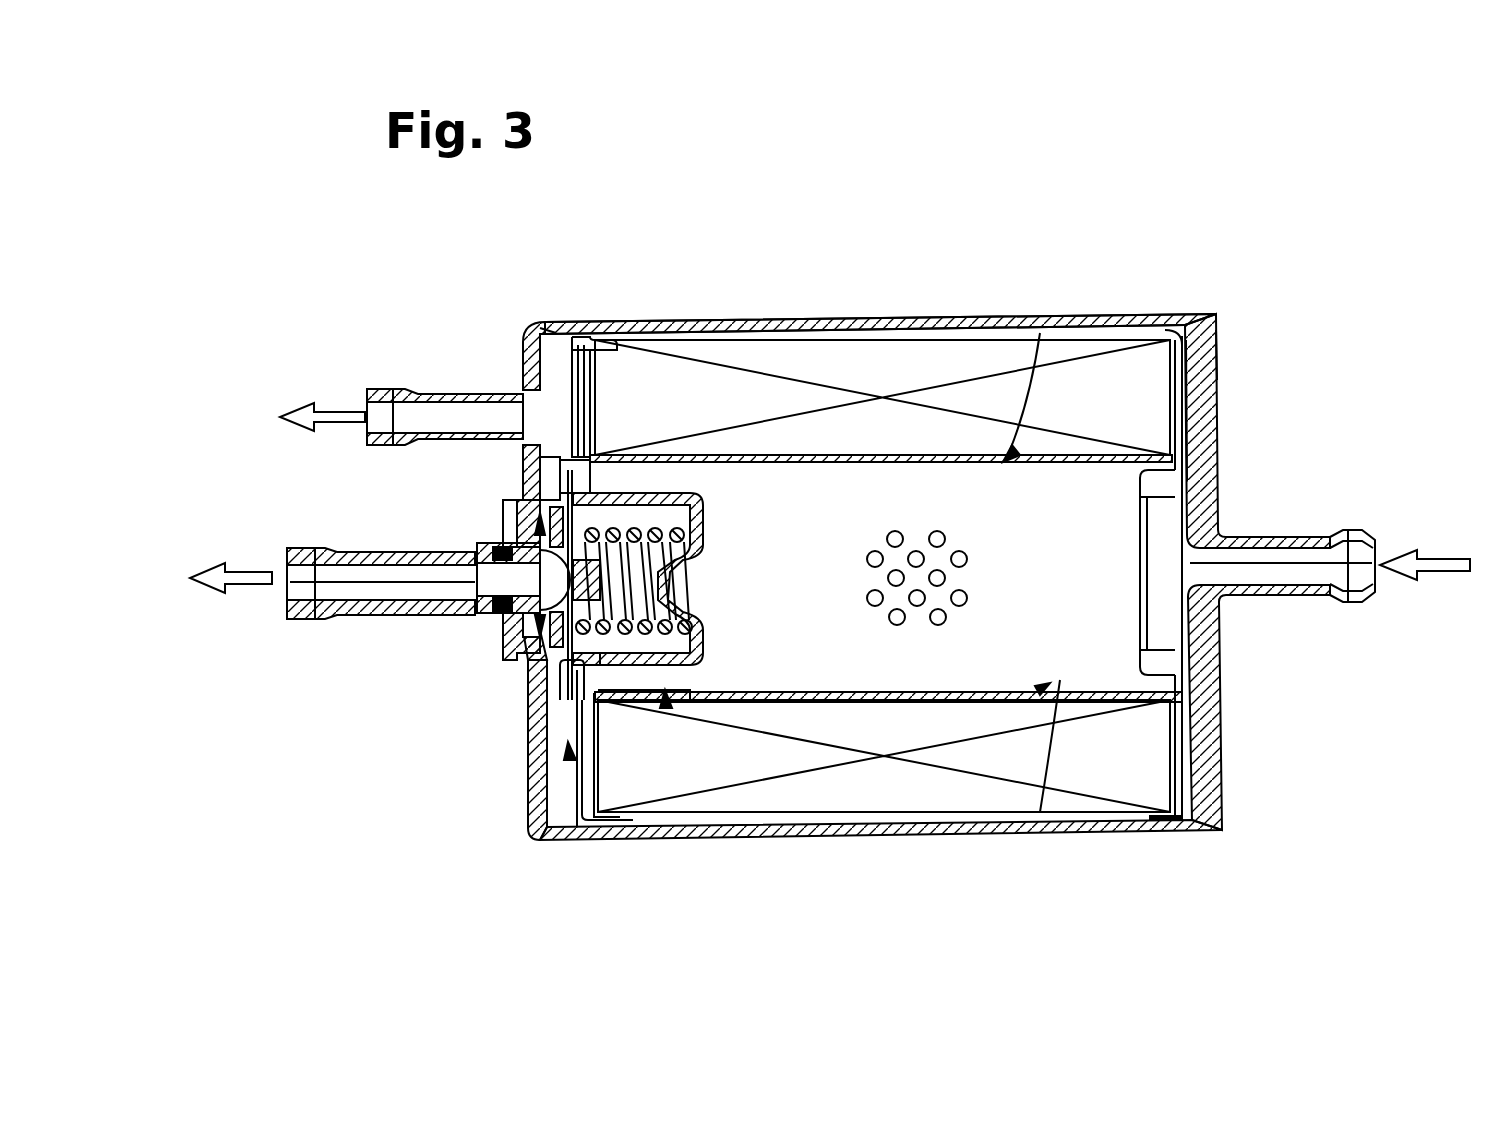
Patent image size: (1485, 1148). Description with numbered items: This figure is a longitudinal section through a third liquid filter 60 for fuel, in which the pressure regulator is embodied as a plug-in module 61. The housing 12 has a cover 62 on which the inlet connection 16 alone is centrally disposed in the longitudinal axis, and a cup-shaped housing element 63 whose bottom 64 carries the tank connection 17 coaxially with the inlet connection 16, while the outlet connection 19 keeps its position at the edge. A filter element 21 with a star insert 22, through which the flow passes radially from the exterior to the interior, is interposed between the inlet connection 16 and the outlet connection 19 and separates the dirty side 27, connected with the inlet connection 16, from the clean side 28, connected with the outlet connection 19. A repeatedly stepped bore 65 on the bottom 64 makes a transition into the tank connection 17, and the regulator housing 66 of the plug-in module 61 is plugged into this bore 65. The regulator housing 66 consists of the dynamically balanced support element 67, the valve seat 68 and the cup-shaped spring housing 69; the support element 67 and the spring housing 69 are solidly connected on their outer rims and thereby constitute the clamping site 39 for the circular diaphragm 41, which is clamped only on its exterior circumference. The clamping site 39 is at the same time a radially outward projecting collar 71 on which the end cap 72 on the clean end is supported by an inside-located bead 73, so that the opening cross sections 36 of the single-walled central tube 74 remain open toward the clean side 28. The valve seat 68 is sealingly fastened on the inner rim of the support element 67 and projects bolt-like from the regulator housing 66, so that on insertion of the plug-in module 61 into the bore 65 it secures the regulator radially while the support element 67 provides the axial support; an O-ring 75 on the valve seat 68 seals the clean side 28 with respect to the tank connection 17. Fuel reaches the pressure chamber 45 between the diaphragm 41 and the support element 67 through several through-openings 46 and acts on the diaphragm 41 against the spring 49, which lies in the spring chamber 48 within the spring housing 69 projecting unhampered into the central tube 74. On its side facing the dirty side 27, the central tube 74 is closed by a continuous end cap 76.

The housing 12 is at (905, 313).
The inlet connection 16 is at (1312, 570).
The tank connection 17 is at (310, 565).
The outlet connection 19 is at (390, 415).
The filter element 21 is at (967, 840).
The star insert 22 is at (757, 468).
The dirty side 27 is at (1180, 472).
The clean side 28 is at (548, 812).
The opening cross sections 36 is at (612, 705).
The clamping site 39 is at (530, 455).
The diaphragm 41 is at (672, 495).
The pressure chamber 45 is at (522, 668).
The through-openings 46 is at (570, 485).
The spring chamber 48 is at (703, 655).
The spring 49 is at (703, 605).
The liquid filter 60 is at (1135, 300).
The plug-in module 61 is at (678, 490).
The cover 62 is at (1200, 395).
The cup-shaped housing element 63 is at (850, 840).
The bottom 64 is at (535, 768).
The stepped bore 65 is at (512, 525).
The regulator housing 66 is at (670, 710).
The support element 67 is at (558, 690).
The valve seat 68 is at (462, 603).
The spring housing 69 is at (703, 520).
The collar 71 is at (575, 760).
The end cap 72 is at (542, 326).
The bead 73 is at (580, 400).
The central tube 74 is at (1118, 670).
The O-ring 75 is at (500, 628).
The end cap 76 is at (1140, 515).